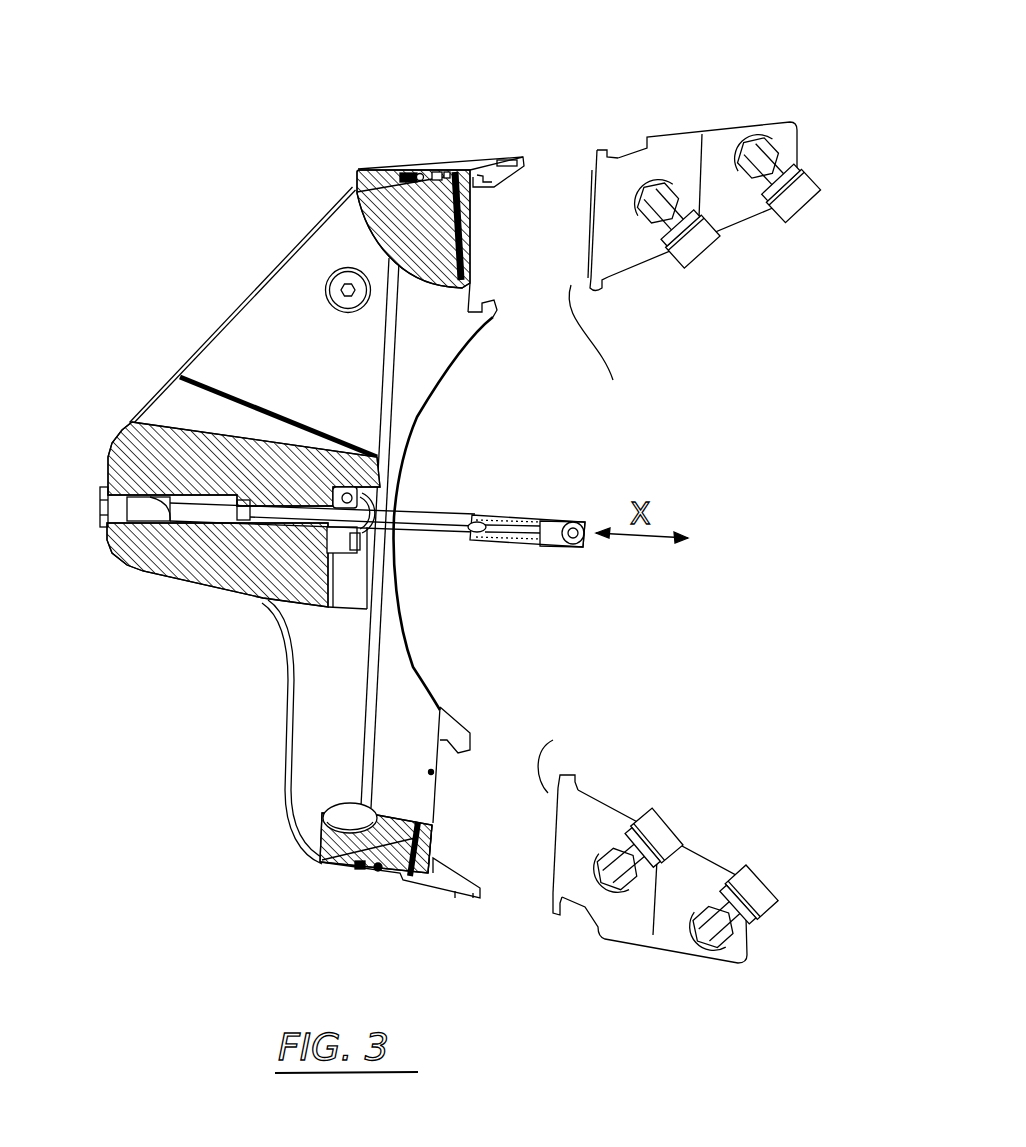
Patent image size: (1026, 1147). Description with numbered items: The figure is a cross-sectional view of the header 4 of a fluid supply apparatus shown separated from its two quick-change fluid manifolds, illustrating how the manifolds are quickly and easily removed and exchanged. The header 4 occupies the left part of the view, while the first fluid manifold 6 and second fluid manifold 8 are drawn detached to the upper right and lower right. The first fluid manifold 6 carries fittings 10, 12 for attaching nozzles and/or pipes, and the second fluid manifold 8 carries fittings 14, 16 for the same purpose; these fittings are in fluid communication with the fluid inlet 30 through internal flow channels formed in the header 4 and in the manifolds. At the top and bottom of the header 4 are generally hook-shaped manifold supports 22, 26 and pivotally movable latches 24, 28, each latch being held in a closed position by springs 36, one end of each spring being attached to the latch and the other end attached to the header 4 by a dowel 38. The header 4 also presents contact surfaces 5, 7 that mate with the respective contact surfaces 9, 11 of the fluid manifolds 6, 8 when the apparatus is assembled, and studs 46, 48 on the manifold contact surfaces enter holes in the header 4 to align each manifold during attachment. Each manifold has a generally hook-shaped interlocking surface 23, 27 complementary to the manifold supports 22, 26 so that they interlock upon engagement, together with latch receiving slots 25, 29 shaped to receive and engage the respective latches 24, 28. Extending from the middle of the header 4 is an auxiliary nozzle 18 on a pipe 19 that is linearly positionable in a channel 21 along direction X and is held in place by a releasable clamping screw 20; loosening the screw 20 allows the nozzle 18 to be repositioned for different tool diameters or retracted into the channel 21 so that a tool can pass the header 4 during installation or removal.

The header portion 4 is at (289, 318).
The contact surface 5 is at (467, 297).
The first fluid manifold 6 is at (690, 147).
The contact surface 7 is at (433, 838).
The second fluid manifold 8 is at (636, 930).
The contact surface 9 is at (594, 202).
The fitting 10 is at (802, 188).
The contact surface 11 is at (555, 860).
The fitting 12 is at (705, 237).
The fitting 14 is at (746, 876).
The fitting 16 is at (652, 822).
The auxiliary nozzle 18 is at (563, 512).
The pipe 19 is at (435, 541).
The releasable clamping screw 20 is at (352, 491).
The channel 21 is at (207, 513).
The manifold support 22 is at (500, 318).
The interlocking surface 23 is at (606, 292).
The latch 24 is at (485, 160).
The latch receiving slot 25 is at (612, 148).
The manifold support 26 is at (472, 736).
The interlocking surface 27 is at (580, 776).
The latch 28 is at (446, 886).
The latch receiving slot 29 is at (573, 922).
The fluid inlet 30 is at (350, 815).
The spring 36 is at (352, 191).
The dowel 38 is at (430, 770).
The stud 46 is at (601, 349).
The stud 48 is at (562, 748).